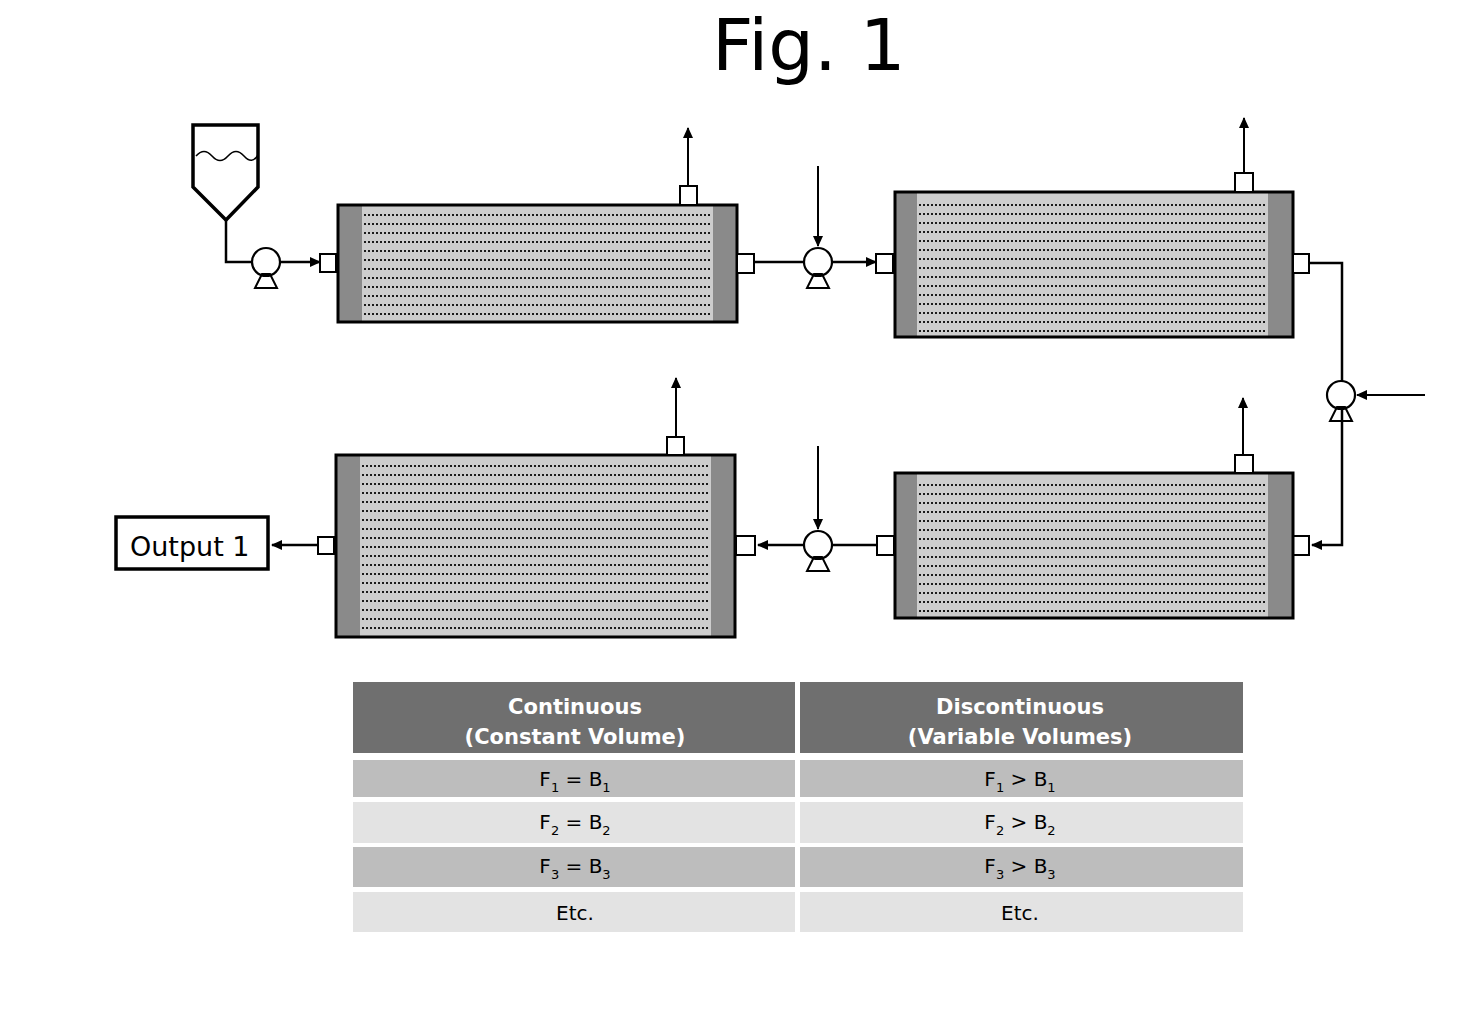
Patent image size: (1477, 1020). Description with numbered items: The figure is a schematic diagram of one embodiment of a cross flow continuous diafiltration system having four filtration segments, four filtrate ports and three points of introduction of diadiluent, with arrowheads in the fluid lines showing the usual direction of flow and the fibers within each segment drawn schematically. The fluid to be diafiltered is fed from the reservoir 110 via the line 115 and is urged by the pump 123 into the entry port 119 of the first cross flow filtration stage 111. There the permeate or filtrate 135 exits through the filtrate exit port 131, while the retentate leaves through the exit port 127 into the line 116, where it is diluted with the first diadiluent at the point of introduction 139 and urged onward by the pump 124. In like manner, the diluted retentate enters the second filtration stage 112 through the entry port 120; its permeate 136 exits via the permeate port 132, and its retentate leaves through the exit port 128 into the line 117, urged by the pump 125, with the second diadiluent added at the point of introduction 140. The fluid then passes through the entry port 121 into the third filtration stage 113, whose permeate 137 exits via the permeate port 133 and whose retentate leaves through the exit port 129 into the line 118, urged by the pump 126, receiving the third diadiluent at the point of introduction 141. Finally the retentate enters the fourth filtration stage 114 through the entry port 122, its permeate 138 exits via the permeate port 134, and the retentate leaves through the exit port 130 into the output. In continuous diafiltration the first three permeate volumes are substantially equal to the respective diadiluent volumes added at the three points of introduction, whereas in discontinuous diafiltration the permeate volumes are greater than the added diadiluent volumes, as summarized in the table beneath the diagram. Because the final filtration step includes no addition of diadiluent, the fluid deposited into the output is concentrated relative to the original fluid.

The reservoir 110 is at (234, 122).
The first cross flow filtration stage 111 is at (410, 202).
The second filtration stage 112 is at (948, 189).
The third filtration stage 113 is at (953, 470).
The fourth filtration stage 114 is at (393, 452).
The feed line 115 is at (231, 276).
The retentate line 116 is at (783, 258).
The retentate line 117 is at (1353, 480).
The retentate line 118 is at (780, 557).
The entry port 119 is at (326, 285).
The entry port 120 is at (882, 250).
The entry port 121 is at (1306, 560).
The entry port 122 is at (753, 520).
The pump 123 is at (271, 246).
The pump 124 is at (826, 294).
The pump 125 is at (1355, 367).
The pump 126 is at (829, 570).
The exit port 127 is at (757, 281).
The exit port 128 is at (1311, 240).
The exit port 129 is at (880, 528).
The exit port 130 is at (316, 530).
The filtrate exit port 131 is at (672, 183).
The permeate port 132 is at (1228, 170).
The permeate port 133 is at (1222, 456).
The permeate port 134 is at (653, 437).
The permeate or filtrate 135 is at (668, 106).
The permeate 136 is at (1251, 88).
The permeate 137 is at (1222, 380).
The permeate 138 is at (649, 362).
The point of introduction of diadiluent 139 is at (842, 142).
The point of introduction of diadiluent 140 is at (1432, 420).
The point of introduction of diadiluent 141 is at (833, 414).